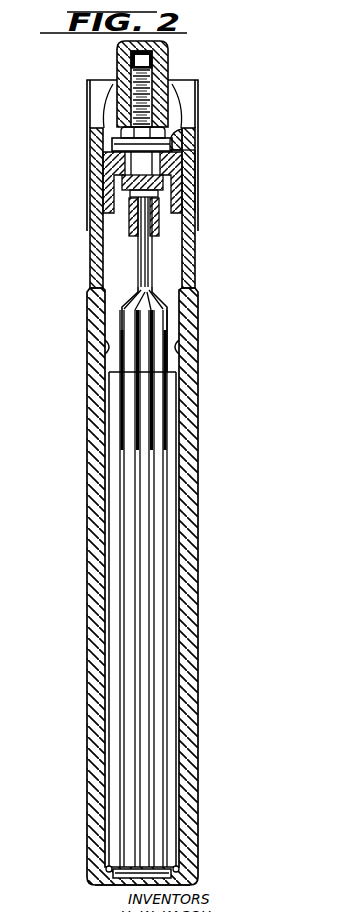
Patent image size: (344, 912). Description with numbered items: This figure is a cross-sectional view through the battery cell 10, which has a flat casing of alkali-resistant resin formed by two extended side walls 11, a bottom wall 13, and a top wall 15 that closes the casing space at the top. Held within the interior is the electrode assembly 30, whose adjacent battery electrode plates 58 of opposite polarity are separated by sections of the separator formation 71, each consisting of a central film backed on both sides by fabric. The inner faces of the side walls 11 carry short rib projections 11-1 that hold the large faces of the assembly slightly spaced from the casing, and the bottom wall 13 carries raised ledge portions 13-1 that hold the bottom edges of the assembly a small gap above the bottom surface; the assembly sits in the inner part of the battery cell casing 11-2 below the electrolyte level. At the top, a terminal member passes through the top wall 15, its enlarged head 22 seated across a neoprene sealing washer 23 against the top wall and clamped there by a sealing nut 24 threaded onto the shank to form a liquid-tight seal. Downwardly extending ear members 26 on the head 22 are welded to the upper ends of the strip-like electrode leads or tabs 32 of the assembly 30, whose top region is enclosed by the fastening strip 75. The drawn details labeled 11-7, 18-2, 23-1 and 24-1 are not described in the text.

The battery cell 10 is at (205, 67).
The extended side walls 11 is at (92, 471).
The rib projections 11-1 is at (104, 345).
The battery cell casing 11-2 is at (97, 172).
The neck portion of sheath 11-7 is at (91, 290).
The bottom wall 13 is at (95, 886).
The raised ledge portions 13-1 is at (147, 876).
The top wall 15 is at (186, 150).
The terminal shell 18-2 is at (88, 104).
The enlarged head 22 is at (124, 191).
The sealing washer 23 is at (195, 174).
The nut and flange plate 23-1 is at (176, 133).
The sealing nut 24 is at (168, 125).
The terminal cap 24-1 is at (117, 54).
The ear members 26 is at (130, 223).
The electrode assembly 30 is at (126, 569).
The electrode leads or tabs 32 is at (158, 271).
The battery electrode plates 58 is at (151, 545).
The separator formation 71 is at (168, 574).
The fastening strip 75 is at (109, 515).